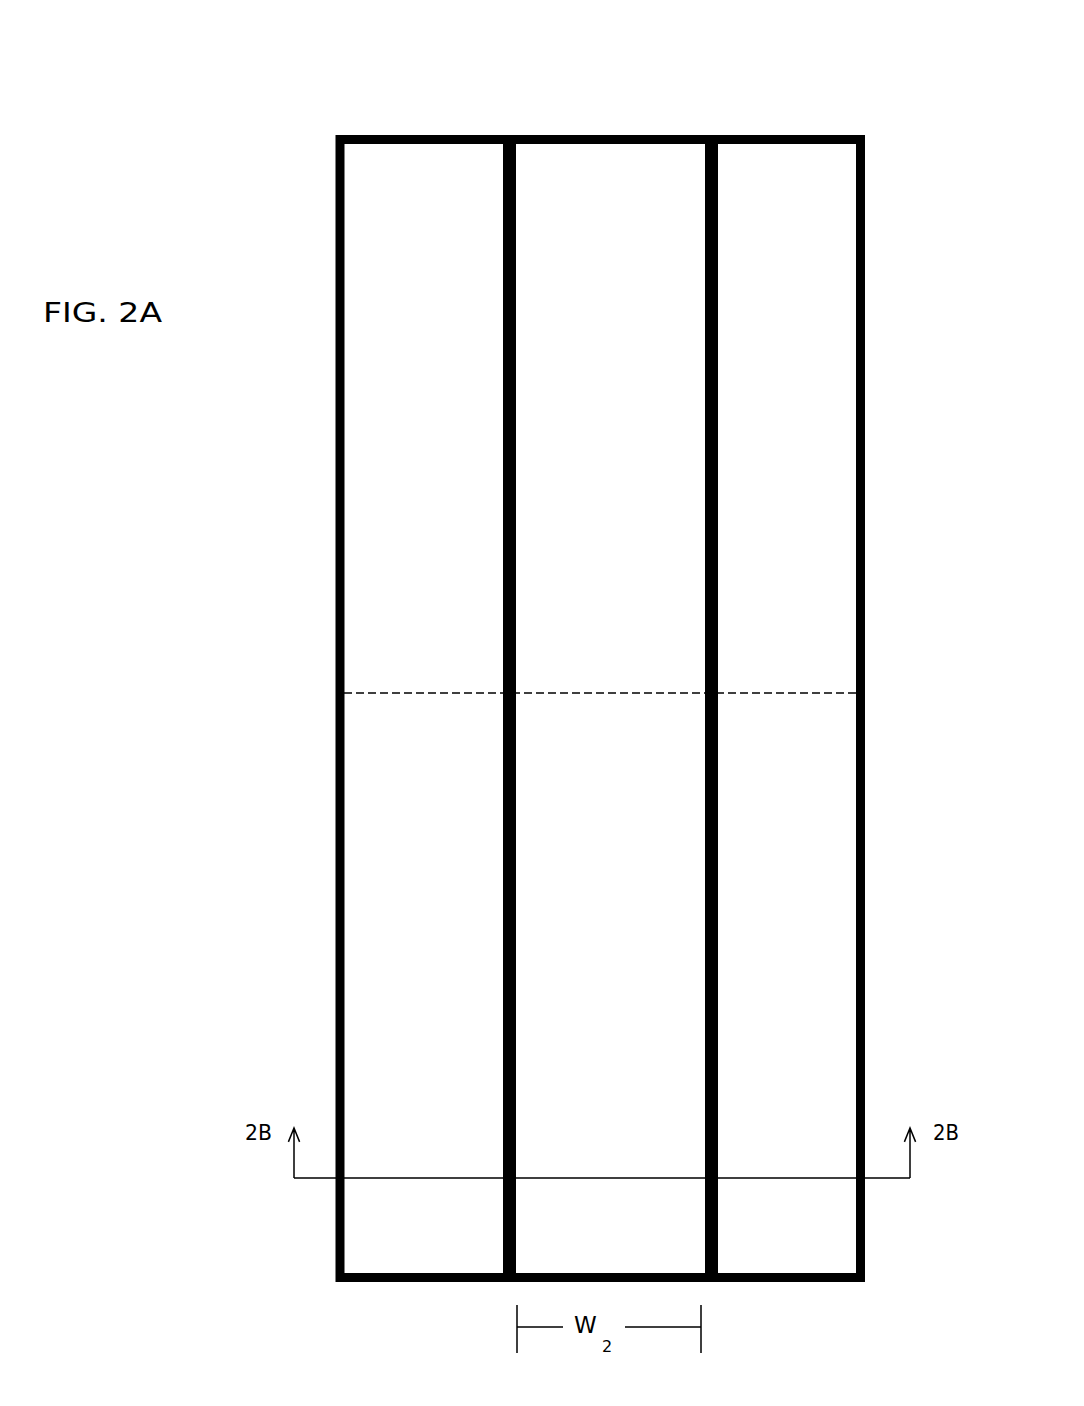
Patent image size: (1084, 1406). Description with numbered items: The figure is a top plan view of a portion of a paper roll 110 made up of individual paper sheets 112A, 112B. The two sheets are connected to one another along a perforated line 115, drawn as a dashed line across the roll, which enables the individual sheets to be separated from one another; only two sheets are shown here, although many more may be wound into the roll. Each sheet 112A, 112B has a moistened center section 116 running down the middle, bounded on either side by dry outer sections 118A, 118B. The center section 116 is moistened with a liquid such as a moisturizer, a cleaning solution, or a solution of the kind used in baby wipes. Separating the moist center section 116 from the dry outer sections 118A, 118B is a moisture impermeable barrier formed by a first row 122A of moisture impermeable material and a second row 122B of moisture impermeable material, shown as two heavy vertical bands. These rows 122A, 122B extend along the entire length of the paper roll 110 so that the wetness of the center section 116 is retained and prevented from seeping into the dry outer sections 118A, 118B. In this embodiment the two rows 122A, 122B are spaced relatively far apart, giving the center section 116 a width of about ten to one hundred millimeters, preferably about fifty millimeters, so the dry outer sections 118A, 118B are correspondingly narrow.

The paper roll 110 is at (269, 150).
The individual paper sheet 112A is at (297, 475).
The individual paper sheet 112B is at (304, 1044).
The perforated line 115 is at (408, 693).
The moistened center section 116 is at (617, 442).
The dry outer section 118A is at (440, 443).
The dry outer section 118B is at (810, 442).
The first row of moisture impermeable material 122A is at (503, 253).
The second row of moisture impermeable material 122B is at (718, 228).